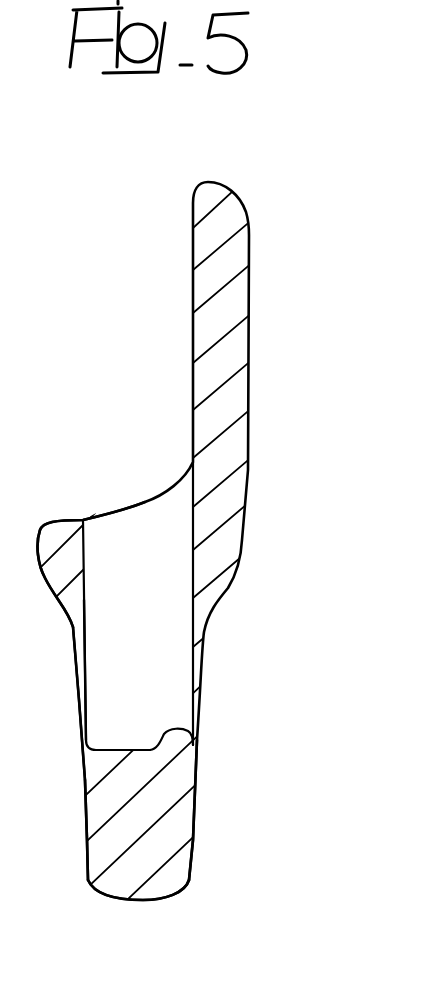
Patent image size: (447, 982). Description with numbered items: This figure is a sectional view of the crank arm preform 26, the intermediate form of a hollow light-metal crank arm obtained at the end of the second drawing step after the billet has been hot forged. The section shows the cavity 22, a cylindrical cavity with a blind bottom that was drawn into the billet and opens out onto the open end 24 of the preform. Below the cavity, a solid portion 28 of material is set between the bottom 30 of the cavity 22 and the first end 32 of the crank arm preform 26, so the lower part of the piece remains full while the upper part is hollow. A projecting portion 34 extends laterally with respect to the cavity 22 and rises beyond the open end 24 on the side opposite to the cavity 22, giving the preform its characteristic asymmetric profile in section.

The cavity 22 is at (93, 645).
The open end 24 is at (93, 512).
The crank arm preform 26 is at (122, 330).
The solid portion 28 is at (176, 828).
The bottom of the cavity 30 is at (188, 731).
The first end 32 is at (108, 898).
The projecting portion 34 is at (246, 247).